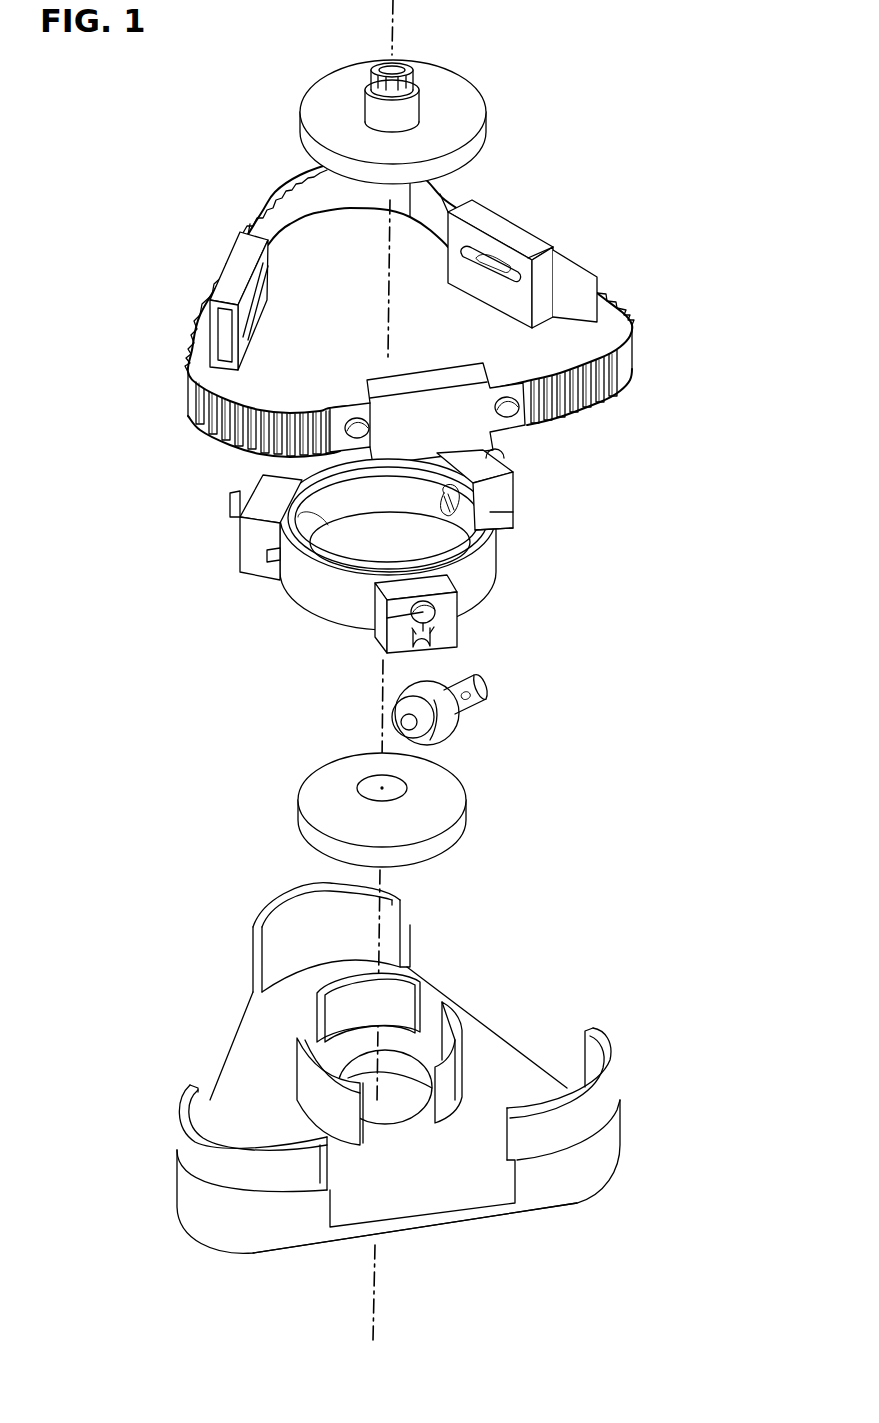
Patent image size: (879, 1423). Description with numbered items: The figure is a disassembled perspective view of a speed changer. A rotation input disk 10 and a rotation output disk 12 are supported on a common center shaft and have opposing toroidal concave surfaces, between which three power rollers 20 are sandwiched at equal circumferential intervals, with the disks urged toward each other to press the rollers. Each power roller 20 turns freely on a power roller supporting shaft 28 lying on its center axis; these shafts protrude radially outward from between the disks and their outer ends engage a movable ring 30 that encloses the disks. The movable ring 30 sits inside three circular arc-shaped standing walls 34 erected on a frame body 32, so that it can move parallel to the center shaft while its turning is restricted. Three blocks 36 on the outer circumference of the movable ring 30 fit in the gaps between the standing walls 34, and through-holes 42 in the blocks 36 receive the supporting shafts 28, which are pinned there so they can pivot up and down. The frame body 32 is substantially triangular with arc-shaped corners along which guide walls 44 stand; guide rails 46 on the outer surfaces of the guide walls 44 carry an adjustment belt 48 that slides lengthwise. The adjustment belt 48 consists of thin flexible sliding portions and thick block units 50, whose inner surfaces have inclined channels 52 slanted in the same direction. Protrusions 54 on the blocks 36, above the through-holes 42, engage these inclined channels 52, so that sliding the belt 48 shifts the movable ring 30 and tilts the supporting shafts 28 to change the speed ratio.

The rotation input disk 10 is at (466, 830).
The rotation output disk 12 is at (487, 124).
The power roller 20 is at (457, 723).
The power roller supporting shaft 28 is at (490, 682).
The movable ring 30 is at (500, 532).
The frame body 32 is at (232, 1033).
The standing wall 34 is at (463, 1022).
The block 36 is at (513, 495).
The through-hole 42 is at (513, 523).
The guide wall 44 is at (600, 1036).
The guide rail 46 is at (605, 1112).
The adjustment belt 48 is at (598, 291).
The block unit 50 is at (498, 213).
The inclined channel 52 is at (537, 230).
The protrusion 54 is at (375, 637).